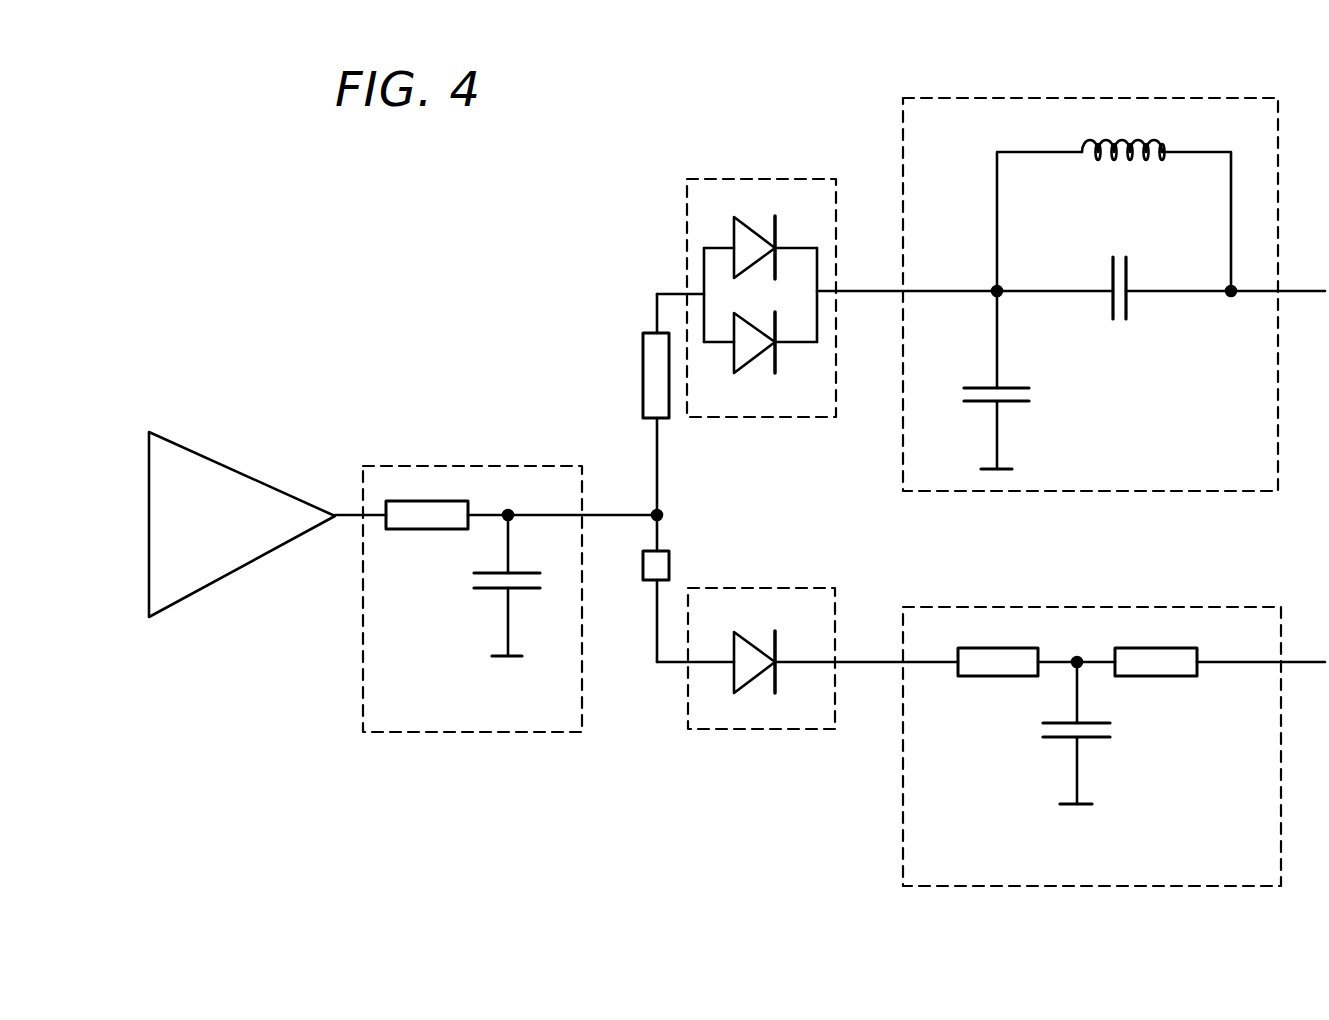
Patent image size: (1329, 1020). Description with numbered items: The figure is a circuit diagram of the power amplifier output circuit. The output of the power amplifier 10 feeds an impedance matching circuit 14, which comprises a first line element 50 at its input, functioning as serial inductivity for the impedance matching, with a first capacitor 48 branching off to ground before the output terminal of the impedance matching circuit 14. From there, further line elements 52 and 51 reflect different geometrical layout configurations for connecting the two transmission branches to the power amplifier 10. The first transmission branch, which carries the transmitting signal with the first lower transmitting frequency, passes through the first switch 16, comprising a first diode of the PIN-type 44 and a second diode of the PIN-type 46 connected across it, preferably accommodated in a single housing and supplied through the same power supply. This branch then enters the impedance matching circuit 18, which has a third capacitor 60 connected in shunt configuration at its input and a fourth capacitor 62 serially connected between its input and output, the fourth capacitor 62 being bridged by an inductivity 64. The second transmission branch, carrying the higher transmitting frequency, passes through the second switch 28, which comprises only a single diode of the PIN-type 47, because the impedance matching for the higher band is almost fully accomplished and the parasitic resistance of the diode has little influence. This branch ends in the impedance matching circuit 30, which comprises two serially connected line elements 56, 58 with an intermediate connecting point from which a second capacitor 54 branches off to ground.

The power amplifier 10 is at (225, 465).
The impedance matching circuit 14 is at (523, 464).
The first switch 16 is at (761, 257).
The impedance matching circuit 18 is at (1101, 262).
The second switch 28 is at (777, 623).
The impedance matching circuit 30 is at (1114, 707).
The first diode of the PIN-type 44 is at (777, 240).
The second diode of the PIN-type 46 is at (776, 350).
The diode of the PIN-type 47 is at (777, 650).
The first capacitor 48 is at (477, 580).
The first line element 50 is at (424, 501).
The line element 51 is at (672, 562).
The line element 52 is at (643, 376).
The second capacitor 54 is at (1113, 731).
The line element 56 is at (997, 648).
The line element 58 is at (1152, 648).
The third capacitor 60 is at (1034, 396).
The fourth capacitor 62 is at (1121, 322).
The inductivity 64 is at (1120, 160).